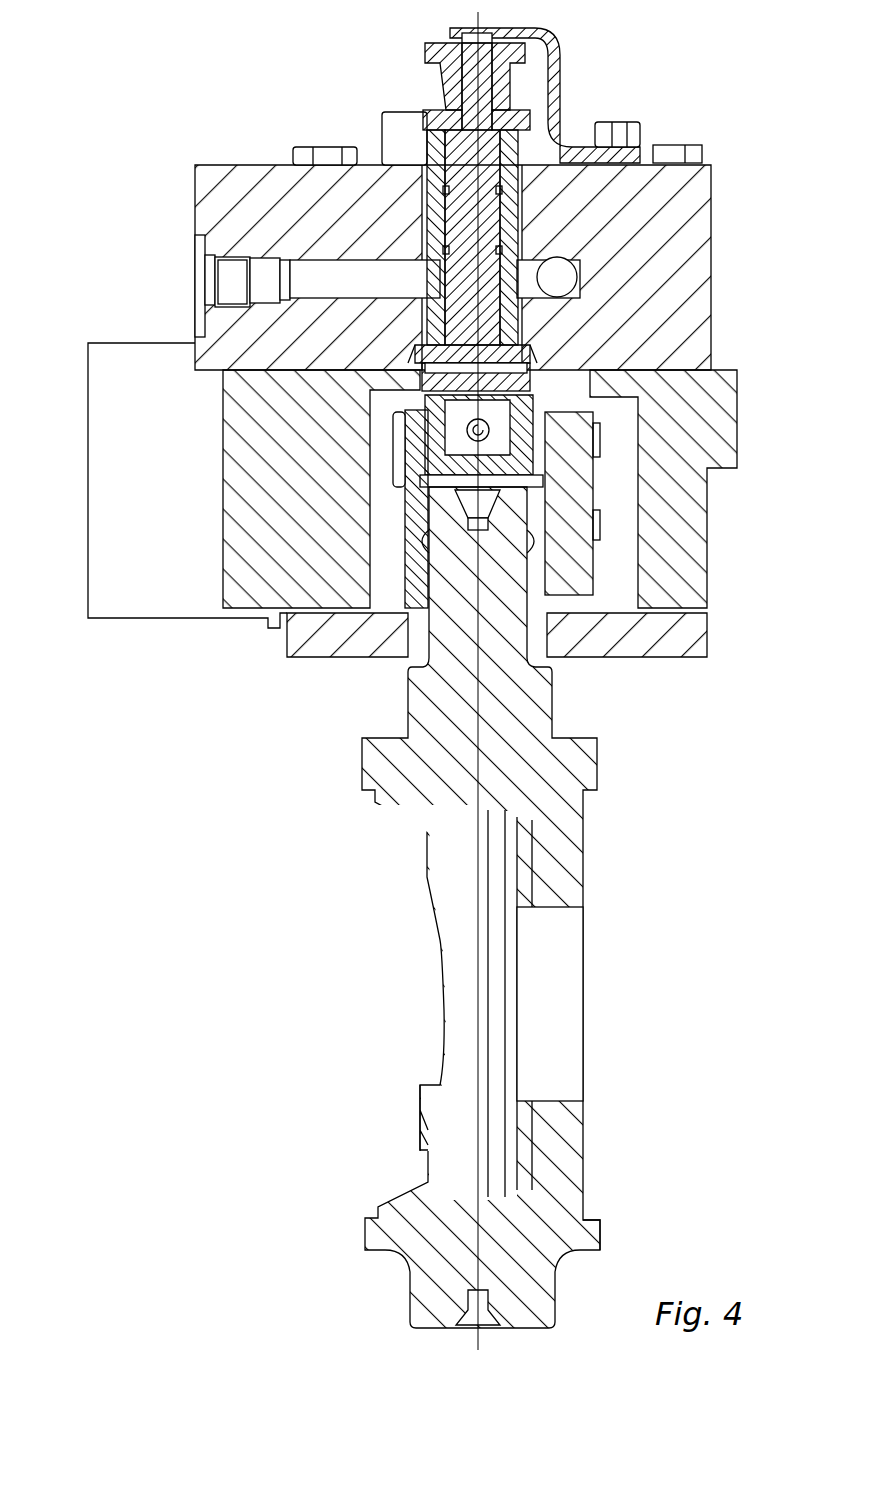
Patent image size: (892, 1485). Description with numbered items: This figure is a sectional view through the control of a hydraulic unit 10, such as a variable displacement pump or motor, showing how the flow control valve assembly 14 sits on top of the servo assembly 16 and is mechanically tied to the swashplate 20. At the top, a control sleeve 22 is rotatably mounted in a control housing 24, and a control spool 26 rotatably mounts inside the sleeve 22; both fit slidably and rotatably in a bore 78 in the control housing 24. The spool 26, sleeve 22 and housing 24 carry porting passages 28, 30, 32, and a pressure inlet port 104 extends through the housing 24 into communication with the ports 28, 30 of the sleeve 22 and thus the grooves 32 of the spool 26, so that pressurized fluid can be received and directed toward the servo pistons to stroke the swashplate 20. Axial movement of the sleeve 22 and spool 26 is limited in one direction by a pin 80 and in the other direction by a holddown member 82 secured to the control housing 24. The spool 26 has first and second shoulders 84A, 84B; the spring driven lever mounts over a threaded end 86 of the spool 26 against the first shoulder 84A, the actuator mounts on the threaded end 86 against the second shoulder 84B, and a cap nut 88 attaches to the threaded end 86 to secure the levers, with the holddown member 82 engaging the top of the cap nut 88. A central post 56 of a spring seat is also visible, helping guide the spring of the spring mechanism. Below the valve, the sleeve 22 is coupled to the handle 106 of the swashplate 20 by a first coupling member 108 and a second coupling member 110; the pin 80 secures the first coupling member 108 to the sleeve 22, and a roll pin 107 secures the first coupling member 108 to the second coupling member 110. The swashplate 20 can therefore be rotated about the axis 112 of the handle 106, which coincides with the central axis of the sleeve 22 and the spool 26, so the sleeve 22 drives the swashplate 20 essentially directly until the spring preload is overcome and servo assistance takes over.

The hydraulic unit 10 is at (658, 102).
The flow control valve assembly 14 is at (203, 132).
The servo assembly 16 is at (95, 576).
The swashplate 20 is at (606, 1222).
The control sleeve 22 is at (545, 160).
The control housing 24 is at (232, 165).
The control spool 26 is at (600, 145).
The porting passage 28 is at (443, 277).
The porting passage 30 is at (540, 272).
The porting passage 32 is at (443, 243).
The central post 56 is at (462, 70).
The bore 78 is at (520, 195).
The pin 80 is at (510, 375).
The holddown member 82 is at (517, 29).
The first shoulder 84A is at (430, 122).
The second shoulder 84B is at (445, 113).
The threaded end 86 is at (452, 102).
The cap nut 88 is at (462, 62).
The pressure inlet port 104 is at (313, 282).
The handle 106 is at (452, 578).
The roll pin 107 is at (485, 428).
The first coupling member 108 is at (428, 345).
The second coupling member 110 is at (625, 390).
The axis 112 is at (481, 1156).